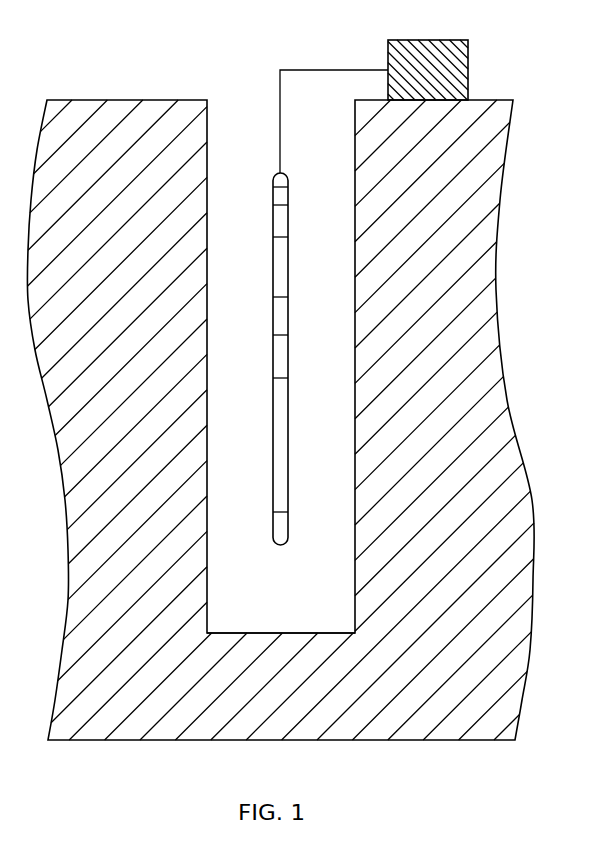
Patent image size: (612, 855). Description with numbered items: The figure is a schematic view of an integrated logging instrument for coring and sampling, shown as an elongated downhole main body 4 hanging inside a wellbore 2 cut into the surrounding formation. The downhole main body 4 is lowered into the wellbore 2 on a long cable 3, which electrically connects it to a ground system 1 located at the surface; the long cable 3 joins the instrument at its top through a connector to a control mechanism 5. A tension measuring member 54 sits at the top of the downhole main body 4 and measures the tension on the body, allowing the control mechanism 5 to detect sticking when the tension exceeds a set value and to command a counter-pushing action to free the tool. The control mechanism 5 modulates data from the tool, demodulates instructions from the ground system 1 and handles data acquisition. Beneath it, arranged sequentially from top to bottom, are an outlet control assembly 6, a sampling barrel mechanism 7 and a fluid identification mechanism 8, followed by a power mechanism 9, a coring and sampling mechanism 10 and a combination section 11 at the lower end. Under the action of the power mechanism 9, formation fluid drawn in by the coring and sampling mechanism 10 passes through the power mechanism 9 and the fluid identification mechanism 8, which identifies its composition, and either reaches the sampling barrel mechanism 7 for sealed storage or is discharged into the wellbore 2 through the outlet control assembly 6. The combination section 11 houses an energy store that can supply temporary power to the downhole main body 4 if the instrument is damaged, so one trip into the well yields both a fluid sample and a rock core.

The ground system 1 is at (469, 46).
The wellbore 2 is at (233, 631).
The long cable 3 is at (280, 70).
The downhole main body 4 is at (263, 197).
The tension measuring member 54 is at (283, 178).
The control mechanism 5 is at (288, 196).
The outlet control assembly 6 is at (281, 221).
The sampling barrel mechanism 7 is at (280, 271).
The fluid identification mechanism 8 is at (280, 316).
The power mechanism 9 is at (283, 357).
The coring and sampling mechanism 10 is at (283, 453).
The combination section 11 is at (283, 530).